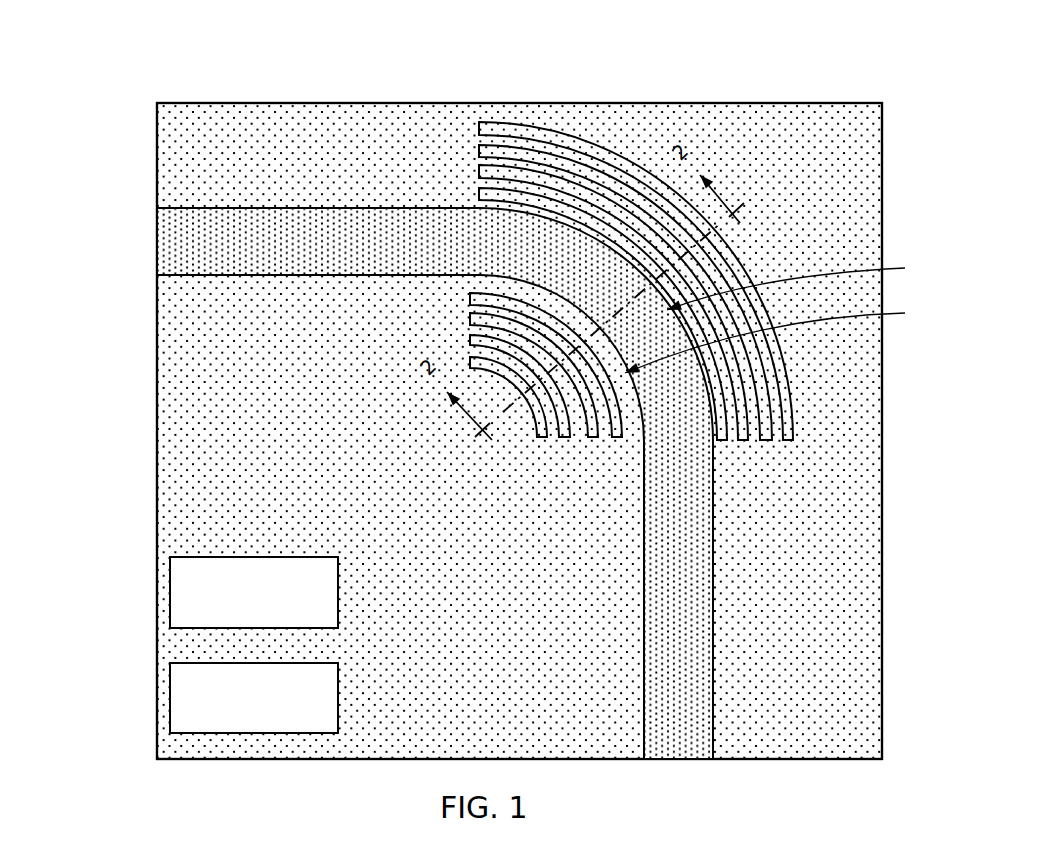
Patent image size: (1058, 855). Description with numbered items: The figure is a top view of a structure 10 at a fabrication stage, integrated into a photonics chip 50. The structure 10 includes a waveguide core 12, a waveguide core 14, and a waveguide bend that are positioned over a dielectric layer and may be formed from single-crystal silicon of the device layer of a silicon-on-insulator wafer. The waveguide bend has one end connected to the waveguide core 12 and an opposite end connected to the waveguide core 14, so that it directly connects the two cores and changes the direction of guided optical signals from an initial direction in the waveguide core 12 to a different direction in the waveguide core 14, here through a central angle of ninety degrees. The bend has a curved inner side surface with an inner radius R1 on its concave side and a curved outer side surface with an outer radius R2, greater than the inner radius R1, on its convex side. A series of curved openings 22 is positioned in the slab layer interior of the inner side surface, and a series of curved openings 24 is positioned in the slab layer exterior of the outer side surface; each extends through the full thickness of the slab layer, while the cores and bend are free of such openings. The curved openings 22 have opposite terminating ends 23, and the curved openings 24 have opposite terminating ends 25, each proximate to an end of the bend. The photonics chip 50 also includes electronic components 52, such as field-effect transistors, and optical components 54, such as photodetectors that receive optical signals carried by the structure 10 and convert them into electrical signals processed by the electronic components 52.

The structure 10 is at (760, 92).
The waveguide core 12 is at (300, 238).
The waveguide core 14 is at (670, 675).
The curved openings 22 is at (490, 342).
The terminating ends 23 is at (471, 312).
The curved openings 24 is at (763, 383).
The terminating ends 25 is at (477, 180).
The inner radius R1 is at (784, 338).
The outer radius R2 is at (805, 284).
The photonics chip 50 is at (128, 125).
The electronic components 52 is at (170, 595).
The optical components 54 is at (170, 696).